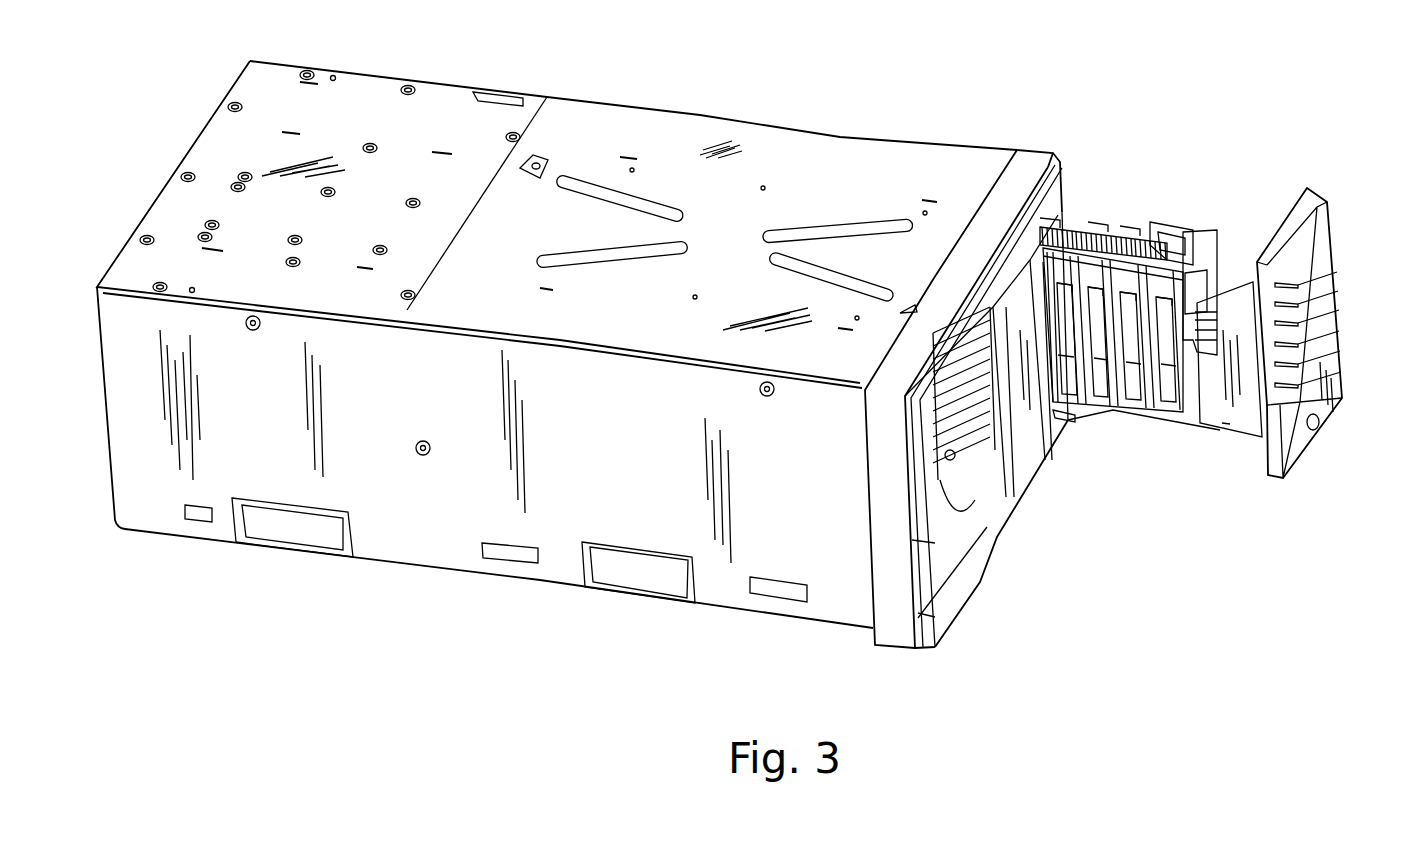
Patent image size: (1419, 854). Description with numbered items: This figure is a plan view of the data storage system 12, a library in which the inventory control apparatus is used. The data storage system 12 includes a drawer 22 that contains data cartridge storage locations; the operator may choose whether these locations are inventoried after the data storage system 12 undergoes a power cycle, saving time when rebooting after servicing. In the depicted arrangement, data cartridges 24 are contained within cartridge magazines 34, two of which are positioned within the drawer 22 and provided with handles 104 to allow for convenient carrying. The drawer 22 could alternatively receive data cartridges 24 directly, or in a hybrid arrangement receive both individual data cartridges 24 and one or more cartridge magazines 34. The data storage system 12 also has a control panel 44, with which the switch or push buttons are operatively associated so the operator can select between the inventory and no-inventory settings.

The data storage system 12 is at (452, 84).
The drawer 22 is at (1330, 184).
The data cartridges 24 is at (1150, 417).
The cartridge magazines 34 is at (1097, 224).
The control panel 44 is at (1028, 470).
The handles 104 is at (1198, 231).